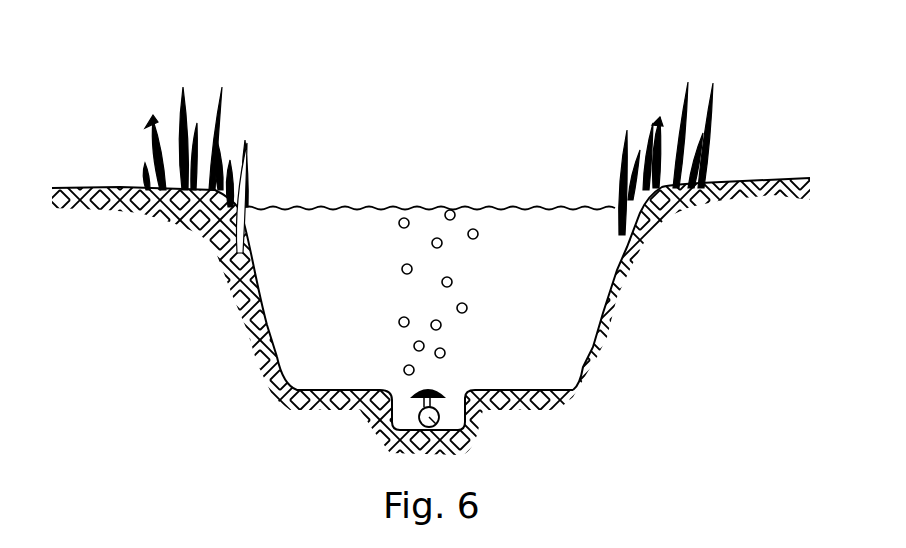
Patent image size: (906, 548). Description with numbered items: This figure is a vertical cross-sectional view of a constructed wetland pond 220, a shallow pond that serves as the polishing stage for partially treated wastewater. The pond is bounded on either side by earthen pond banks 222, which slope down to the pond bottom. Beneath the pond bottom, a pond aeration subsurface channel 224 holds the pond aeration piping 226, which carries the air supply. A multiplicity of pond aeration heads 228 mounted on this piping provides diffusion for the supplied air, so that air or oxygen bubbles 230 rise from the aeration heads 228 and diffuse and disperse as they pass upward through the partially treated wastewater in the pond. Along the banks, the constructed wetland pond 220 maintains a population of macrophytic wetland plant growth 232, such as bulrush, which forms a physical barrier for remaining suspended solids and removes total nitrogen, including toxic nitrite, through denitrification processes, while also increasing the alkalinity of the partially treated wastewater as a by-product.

The constructed wetland pond 220 is at (303, 104).
The earthen pond banks 222 is at (118, 188).
The pond aeration subsurface channel 224 is at (330, 438).
The pond aeration piping 226 is at (467, 440).
The pond aeration heads 228 is at (432, 388).
The air or oxygen bubbles 230 is at (470, 230).
The macrophytic wetland plant growth 232 is at (683, 122).